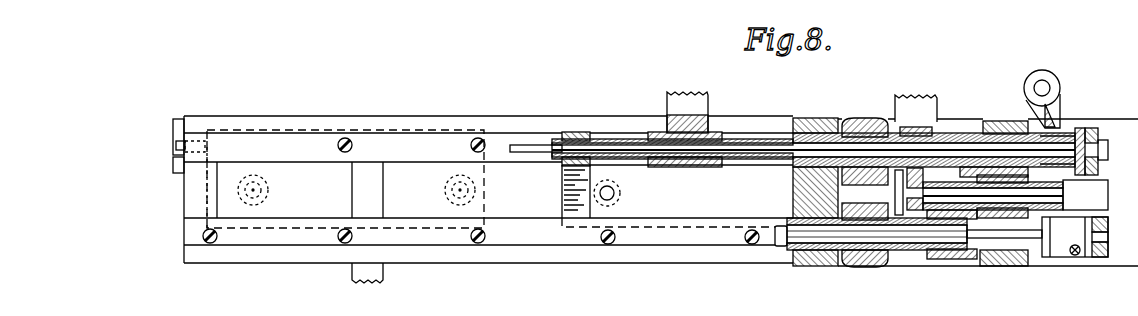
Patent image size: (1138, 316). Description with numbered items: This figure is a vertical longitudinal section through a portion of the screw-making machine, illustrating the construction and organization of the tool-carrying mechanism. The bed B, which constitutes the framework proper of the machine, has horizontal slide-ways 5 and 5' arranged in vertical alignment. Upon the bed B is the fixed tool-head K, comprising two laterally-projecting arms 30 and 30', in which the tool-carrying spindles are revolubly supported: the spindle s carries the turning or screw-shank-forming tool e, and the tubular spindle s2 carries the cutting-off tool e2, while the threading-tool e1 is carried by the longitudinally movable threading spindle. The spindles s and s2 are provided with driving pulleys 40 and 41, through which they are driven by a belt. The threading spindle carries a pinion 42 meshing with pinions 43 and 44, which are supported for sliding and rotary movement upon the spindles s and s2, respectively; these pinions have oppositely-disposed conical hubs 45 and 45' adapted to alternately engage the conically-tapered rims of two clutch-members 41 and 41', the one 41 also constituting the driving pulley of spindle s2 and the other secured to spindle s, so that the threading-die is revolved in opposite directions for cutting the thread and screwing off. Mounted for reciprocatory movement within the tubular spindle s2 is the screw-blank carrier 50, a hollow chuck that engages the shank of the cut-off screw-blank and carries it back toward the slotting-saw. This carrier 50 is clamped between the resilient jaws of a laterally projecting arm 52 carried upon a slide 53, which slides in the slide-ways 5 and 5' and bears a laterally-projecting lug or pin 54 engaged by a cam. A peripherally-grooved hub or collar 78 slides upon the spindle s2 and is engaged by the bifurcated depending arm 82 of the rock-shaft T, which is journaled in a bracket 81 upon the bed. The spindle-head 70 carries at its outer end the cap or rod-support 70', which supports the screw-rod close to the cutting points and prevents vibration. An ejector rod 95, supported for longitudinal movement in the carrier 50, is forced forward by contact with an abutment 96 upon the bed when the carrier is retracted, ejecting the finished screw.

The bed B is at (655, 199).
The slide-way 5 is at (547, 175).
The slide-way 5' is at (375, 197).
The abutment 96 is at (182, 146).
The ejector rod 95 is at (766, 152).
The screw-blank carrier 50 is at (737, 140).
The laterally projecting arm 52 is at (700, 107).
The lug or pin 54 is at (610, 192).
The slide 53 is at (677, 185).
The arm of tool-head 30' is at (815, 204).
The driving pulley and clutch-member 41 is at (865, 114).
The driving pulley 40 is at (860, 267).
The pinion 42 is at (895, 188).
The conical hub 45' is at (916, 115).
The cutting-off tool spindle s2 is at (947, 140).
The pinion 44 is at (925, 184).
The turning-tool spindle s is at (890, 275).
The threading-tool e1 is at (1023, 196).
The spindle-head 70 is at (1098, 175).
The cap or rod-support 70' is at (1109, 169).
The grooved hub or collar 78 is at (1081, 128).
The cutting-off tool e2 is at (1082, 146).
The depending arm 82 is at (1053, 108).
The bracket 81 is at (1058, 82).
The rock-shaft T is at (1043, 82).
The turning or screw-shank-forming tool e is at (947, 237).
The conical hub 45 is at (877, 256).
The pinion 43 is at (905, 263).
The clutch-member 41' is at (952, 278).
The tool-head K is at (979, 256).
The arm of tool-head 30 is at (1004, 271).